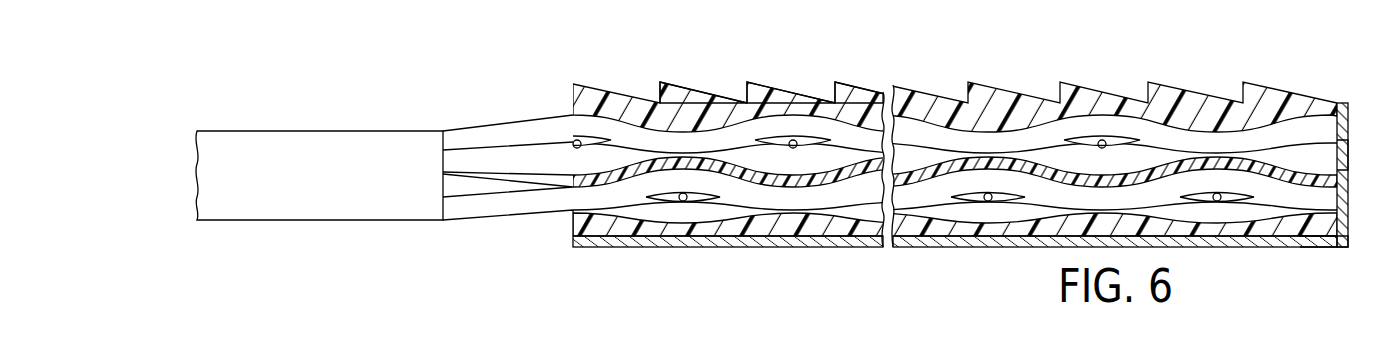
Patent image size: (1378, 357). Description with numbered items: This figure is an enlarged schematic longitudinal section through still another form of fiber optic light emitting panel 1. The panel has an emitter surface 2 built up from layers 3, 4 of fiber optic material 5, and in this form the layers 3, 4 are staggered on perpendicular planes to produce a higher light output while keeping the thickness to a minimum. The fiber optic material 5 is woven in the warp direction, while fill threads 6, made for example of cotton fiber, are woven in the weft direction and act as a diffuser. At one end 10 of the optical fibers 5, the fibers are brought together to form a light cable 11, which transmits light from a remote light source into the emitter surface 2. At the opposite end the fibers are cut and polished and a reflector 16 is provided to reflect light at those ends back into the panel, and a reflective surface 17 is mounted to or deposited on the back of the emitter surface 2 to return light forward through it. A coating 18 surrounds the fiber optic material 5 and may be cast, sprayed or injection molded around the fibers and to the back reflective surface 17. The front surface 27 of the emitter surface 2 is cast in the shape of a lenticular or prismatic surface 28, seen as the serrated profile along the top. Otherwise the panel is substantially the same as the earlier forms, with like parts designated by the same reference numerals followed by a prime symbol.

The light emitting panel 1 is at (689, 151).
The emitter surface 2 is at (853, 82).
The layer 3 is at (1347, 120).
The layer 4 is at (1345, 195).
The fiber optic material 5 is at (1133, 120).
The fill thread 6 is at (686, 201).
The end of the optical fibers 10 is at (571, 109).
The light cable 11 is at (312, 143).
The reflector 16 is at (1342, 155).
The reflective surface 17 is at (935, 243).
The coating 18 is at (1008, 100).
The front surface 27 is at (695, 92).
The lenticular or prismatic surface 28 is at (760, 82).